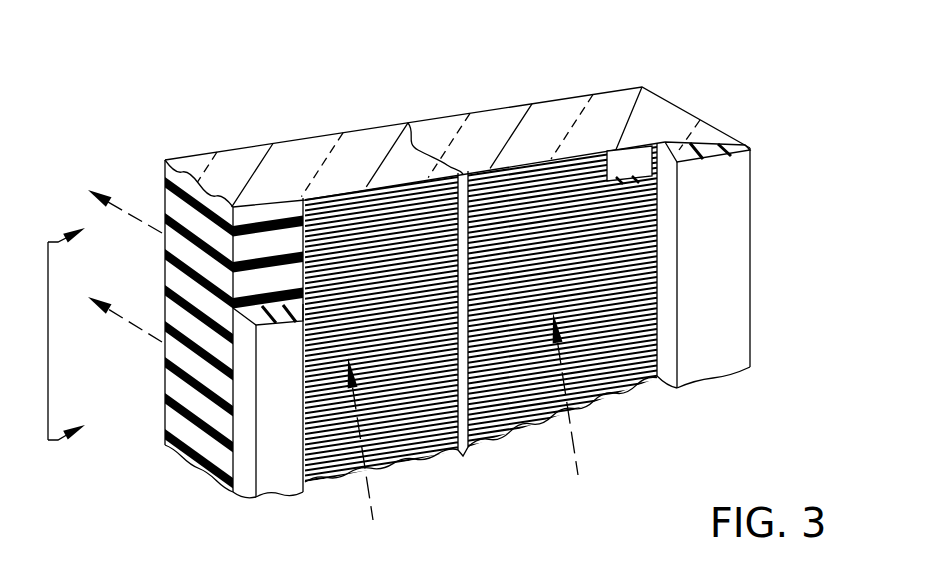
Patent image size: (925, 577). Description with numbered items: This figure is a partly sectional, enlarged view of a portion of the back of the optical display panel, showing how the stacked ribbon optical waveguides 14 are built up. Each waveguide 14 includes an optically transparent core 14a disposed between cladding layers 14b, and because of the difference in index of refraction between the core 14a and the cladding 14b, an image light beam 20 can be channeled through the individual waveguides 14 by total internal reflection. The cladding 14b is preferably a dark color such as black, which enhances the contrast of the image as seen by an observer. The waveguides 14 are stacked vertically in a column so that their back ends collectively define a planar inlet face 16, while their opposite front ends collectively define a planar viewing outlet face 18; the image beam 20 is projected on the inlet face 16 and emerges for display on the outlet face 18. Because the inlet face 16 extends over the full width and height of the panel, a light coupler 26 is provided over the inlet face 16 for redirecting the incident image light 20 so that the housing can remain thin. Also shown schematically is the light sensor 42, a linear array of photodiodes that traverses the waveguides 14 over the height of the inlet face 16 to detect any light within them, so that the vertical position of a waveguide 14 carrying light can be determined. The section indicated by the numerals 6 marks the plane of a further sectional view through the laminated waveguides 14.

The ribbon optical waveguides 14 is at (207, 302).
The optically transparent core 14a is at (208, 443).
The cladding layers 14b is at (176, 448).
The inlet face 16 is at (645, 158).
The viewing outlet face 18 is at (192, 157).
The image light beam 20 is at (576, 455).
The light coupler 26 is at (536, 282).
The light sensor 42 is at (751, 272).
The section line 6- 6 is at (105, 334).